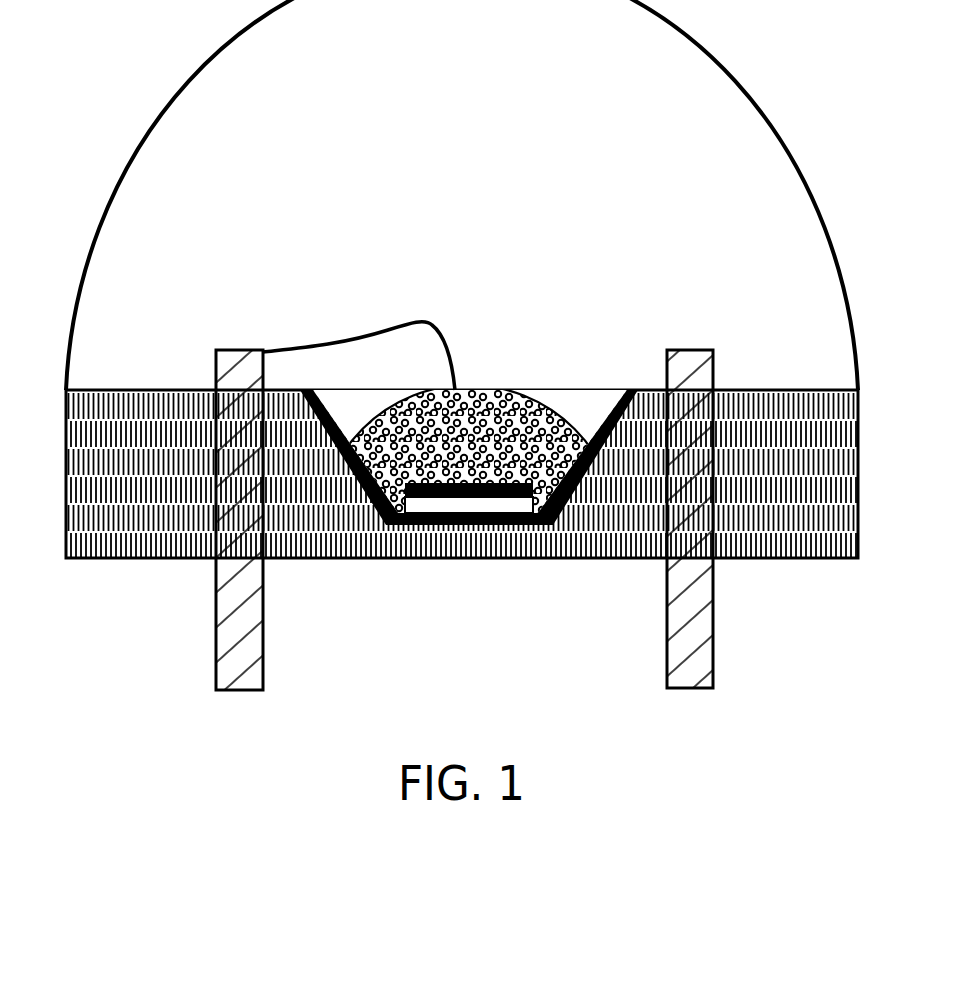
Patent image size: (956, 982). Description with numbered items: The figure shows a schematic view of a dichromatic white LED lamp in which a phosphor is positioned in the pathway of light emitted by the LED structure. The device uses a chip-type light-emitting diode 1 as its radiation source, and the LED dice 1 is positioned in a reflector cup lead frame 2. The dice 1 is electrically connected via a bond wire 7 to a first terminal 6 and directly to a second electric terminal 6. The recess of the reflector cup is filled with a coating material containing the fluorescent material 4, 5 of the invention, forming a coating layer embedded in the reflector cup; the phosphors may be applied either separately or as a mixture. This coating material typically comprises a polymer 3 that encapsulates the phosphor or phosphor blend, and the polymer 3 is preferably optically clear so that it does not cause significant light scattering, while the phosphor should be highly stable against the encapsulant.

The chip-type light-emitting diode 1 is at (498, 514).
The reflector cup lead frame 2 is at (582, 496).
The polymer 3 is at (580, 421).
The fluorescent material 4 is at (382, 405).
The fluorescent material 5 is at (430, 389).
The electric terminal 6 is at (262, 627).
The bond wire 7 is at (327, 342).